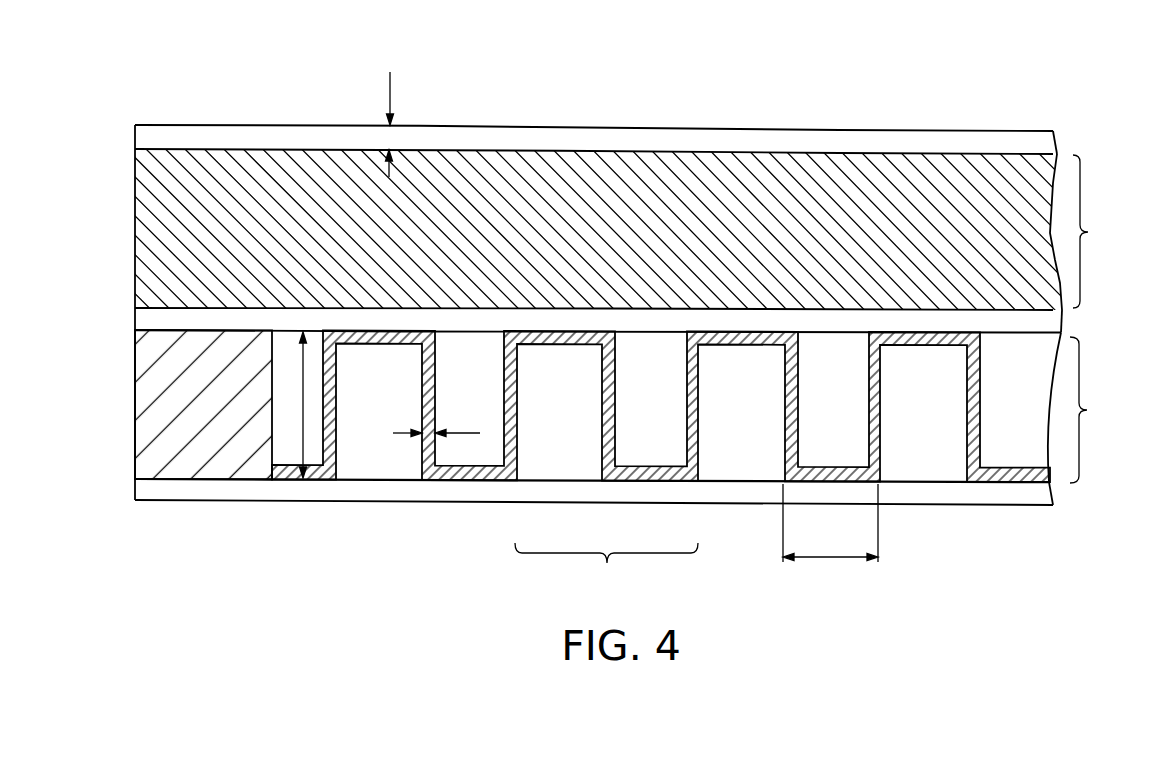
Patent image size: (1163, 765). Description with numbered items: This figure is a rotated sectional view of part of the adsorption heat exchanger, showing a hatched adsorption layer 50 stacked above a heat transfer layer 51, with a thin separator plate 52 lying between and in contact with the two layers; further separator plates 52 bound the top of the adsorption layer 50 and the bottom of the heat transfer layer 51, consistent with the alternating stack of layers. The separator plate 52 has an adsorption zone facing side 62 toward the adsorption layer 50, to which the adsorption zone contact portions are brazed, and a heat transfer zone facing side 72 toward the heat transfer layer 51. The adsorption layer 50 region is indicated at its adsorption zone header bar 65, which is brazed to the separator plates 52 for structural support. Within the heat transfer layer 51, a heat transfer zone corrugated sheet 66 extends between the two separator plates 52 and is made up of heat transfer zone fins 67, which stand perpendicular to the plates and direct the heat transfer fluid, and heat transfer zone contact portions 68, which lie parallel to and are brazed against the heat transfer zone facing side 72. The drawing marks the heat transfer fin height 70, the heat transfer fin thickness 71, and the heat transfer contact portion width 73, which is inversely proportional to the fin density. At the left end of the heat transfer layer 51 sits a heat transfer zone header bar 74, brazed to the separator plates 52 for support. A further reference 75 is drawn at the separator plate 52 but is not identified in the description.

The adsorption layer 50 is at (1090, 232).
The heat transfer layer 51 is at (1087, 408).
The separator plate 52 is at (1025, 130).
The adsorption zone facing side 62 is at (194, 152).
The adsorption zone header bar 65 is at (564, 196).
The heat transfer zone corrugated sheet 66 is at (606, 568).
The heat transfer zone fin 67 is at (518, 396).
The heat transfer zone contact portion 68 is at (640, 473).
The heat transfer fin height 70 is at (303, 397).
The heat transfer fin thickness 71 is at (470, 433).
The heat transfer zone facing side 72 is at (248, 333).
The heat transfer contact portion width 73 is at (832, 558).
The heat transfer zone header bar 74 is at (150, 405).
The thin layer thickness 75 is at (388, 92).